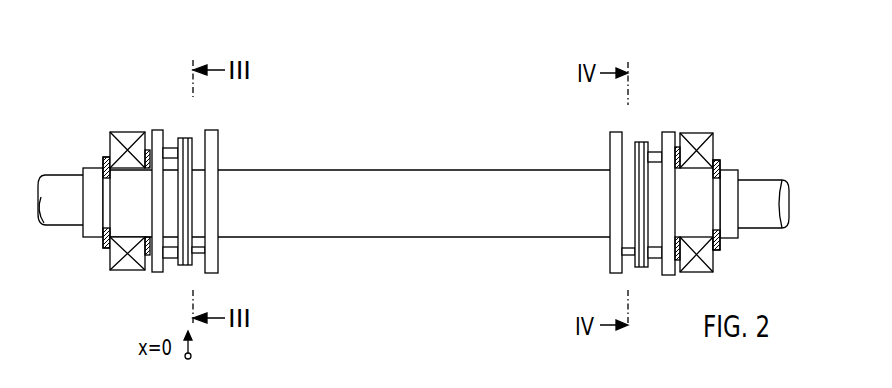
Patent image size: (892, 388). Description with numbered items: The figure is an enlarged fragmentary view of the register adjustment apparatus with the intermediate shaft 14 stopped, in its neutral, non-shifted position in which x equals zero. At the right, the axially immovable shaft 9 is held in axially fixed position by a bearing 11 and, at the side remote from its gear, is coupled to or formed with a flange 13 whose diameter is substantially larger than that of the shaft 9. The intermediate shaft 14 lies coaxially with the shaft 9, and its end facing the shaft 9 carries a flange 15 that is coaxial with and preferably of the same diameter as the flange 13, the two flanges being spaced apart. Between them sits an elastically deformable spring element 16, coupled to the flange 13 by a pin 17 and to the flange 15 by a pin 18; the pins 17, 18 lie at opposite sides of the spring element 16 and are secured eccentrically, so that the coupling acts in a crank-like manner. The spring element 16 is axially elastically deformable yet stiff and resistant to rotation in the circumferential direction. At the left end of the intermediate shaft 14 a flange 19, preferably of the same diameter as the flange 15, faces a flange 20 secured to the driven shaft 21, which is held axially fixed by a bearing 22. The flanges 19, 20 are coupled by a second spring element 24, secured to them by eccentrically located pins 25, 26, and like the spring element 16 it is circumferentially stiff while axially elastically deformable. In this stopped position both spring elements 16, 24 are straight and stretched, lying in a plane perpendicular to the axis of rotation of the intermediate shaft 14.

The shaft 9 is at (728, 172).
The bearing 11 is at (697, 140).
The flange 13 is at (665, 275).
The intermediate shaft 14 is at (427, 225).
The flange 15 is at (612, 132).
The spring element 16 is at (641, 142).
The pin 17 is at (655, 152).
The pin 18 is at (625, 252).
The flange 19 is at (212, 130).
The flange 20 is at (157, 130).
The driven shaft 21 is at (94, 229).
The bearing 22 is at (127, 270).
The spring element 24 is at (185, 138).
The pin 25 is at (203, 251).
The pin 26 is at (170, 148).